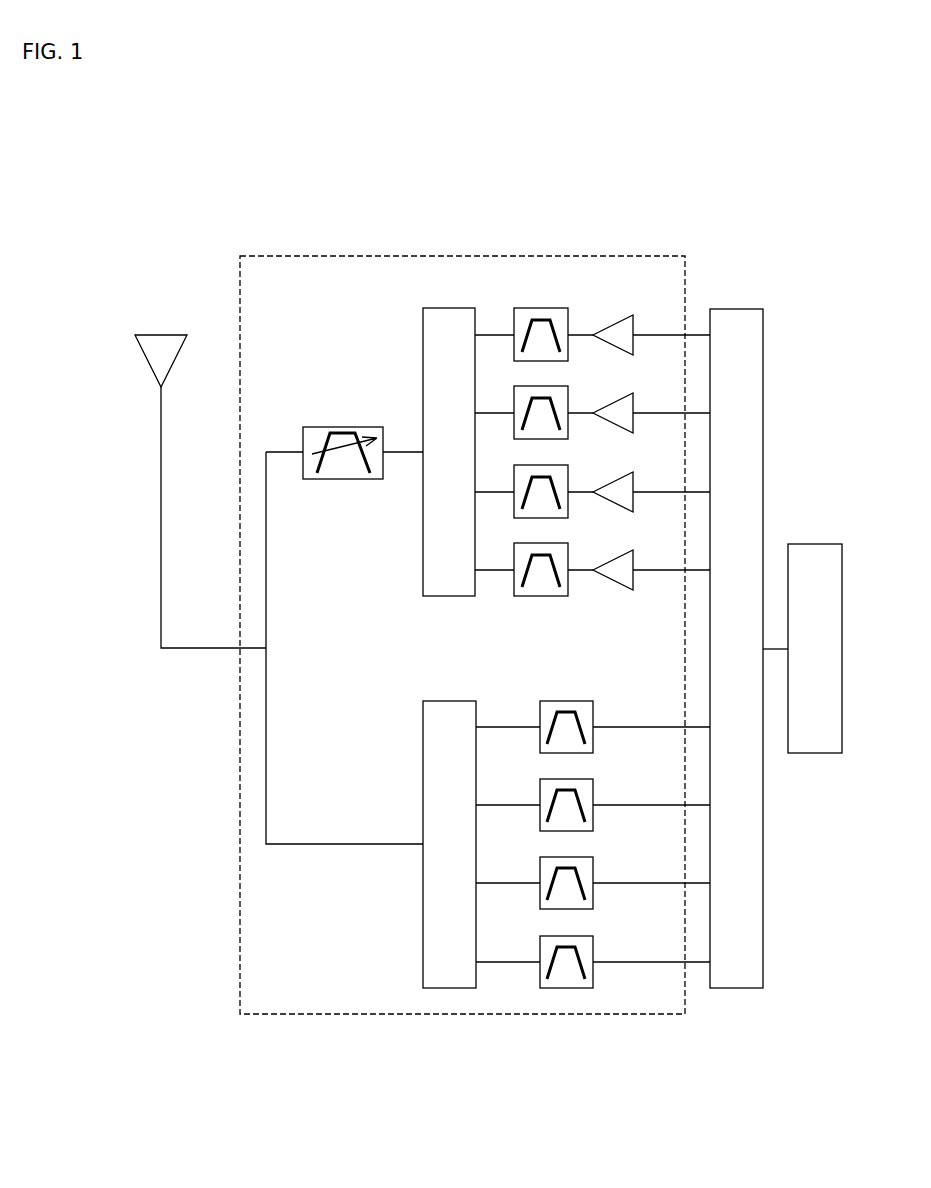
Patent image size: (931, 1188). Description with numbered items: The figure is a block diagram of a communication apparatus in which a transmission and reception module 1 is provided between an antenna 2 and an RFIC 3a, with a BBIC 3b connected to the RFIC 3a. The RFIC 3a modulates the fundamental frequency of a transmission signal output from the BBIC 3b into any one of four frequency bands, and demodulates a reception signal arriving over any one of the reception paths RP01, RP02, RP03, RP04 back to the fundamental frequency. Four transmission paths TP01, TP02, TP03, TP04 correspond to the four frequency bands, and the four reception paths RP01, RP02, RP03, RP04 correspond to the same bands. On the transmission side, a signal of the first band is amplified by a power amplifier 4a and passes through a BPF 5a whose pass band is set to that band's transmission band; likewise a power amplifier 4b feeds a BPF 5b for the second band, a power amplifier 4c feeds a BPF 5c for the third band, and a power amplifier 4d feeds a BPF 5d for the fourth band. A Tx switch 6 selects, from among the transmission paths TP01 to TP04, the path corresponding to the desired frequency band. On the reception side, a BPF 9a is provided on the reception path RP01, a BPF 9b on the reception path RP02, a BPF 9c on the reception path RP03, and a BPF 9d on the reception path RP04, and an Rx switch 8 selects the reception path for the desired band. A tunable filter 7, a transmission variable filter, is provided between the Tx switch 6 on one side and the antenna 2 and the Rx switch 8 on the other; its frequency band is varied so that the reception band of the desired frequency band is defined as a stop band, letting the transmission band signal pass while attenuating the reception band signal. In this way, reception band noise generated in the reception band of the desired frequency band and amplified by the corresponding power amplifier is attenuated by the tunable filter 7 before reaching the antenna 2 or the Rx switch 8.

The transmission and reception module 1 is at (462, 635).
The antenna 2 is at (155, 330).
The RFIC 3a is at (746, 308).
The BBIC 3b is at (822, 543).
The Tx switch 6 is at (421, 328).
The tunable filter 7 is at (335, 426).
The Rx switch 8 is at (421, 726).
The power amplifier 4a is at (611, 325).
The BPF 5a is at (513, 322).
The BPF 9a is at (539, 714).
The power amplifier 4b is at (611, 403).
The BPF 5b is at (513, 400).
The BPF 9b is at (539, 792).
The power amplifier 4c is at (611, 482).
The BPF 5c is at (513, 479).
The BPF 9c is at (539, 870).
The power amplifier 4d is at (611, 560).
The BPF 5d is at (513, 557).
The BPF 9d is at (539, 949).
The transmission path TP01 is at (651, 333).
The reception path RP01 is at (636, 725).
The transmission path TP02 is at (651, 411).
The reception path RP02 is at (636, 803).
The transmission path TP03 is at (651, 490).
The reception path RP03 is at (636, 881).
The transmission path TP04 is at (651, 568).
The reception path RP04 is at (636, 960).